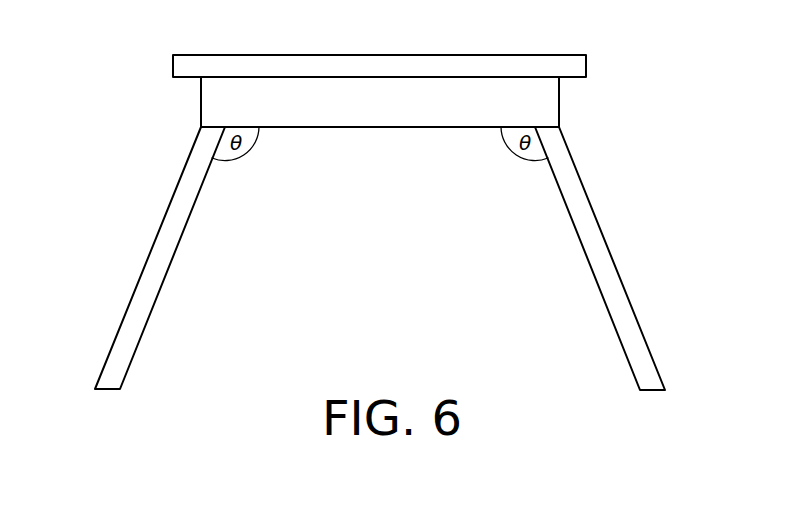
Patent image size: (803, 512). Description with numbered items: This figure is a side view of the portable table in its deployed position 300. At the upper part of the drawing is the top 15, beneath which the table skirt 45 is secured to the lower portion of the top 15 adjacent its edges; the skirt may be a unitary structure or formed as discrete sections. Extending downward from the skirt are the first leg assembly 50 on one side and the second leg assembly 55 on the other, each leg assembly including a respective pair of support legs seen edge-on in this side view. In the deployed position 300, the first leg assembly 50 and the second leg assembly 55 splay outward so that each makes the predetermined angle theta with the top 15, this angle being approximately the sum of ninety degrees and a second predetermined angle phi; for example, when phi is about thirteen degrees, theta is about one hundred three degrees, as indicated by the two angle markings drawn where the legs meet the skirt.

The top 15 is at (588, 62).
The table skirt 45 is at (201, 101).
The first leg assembly 50 is at (137, 285).
The second leg assembly 55 is at (655, 368).
The deployed position 300 is at (636, 123).